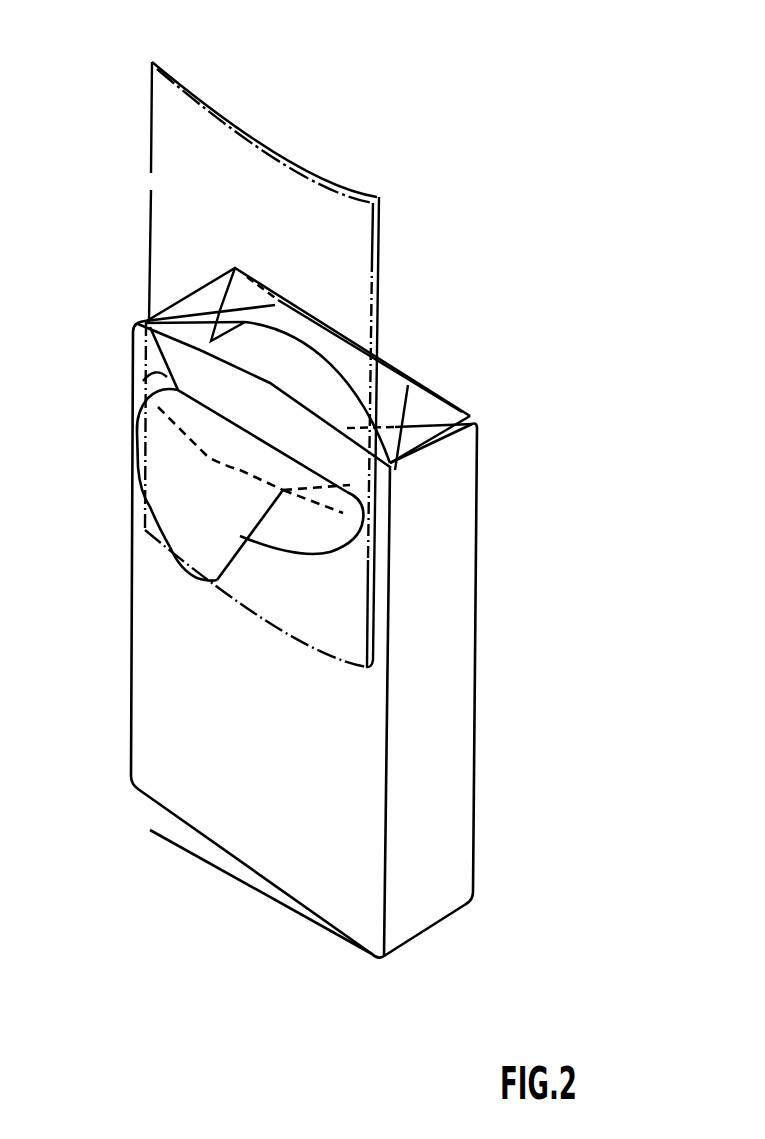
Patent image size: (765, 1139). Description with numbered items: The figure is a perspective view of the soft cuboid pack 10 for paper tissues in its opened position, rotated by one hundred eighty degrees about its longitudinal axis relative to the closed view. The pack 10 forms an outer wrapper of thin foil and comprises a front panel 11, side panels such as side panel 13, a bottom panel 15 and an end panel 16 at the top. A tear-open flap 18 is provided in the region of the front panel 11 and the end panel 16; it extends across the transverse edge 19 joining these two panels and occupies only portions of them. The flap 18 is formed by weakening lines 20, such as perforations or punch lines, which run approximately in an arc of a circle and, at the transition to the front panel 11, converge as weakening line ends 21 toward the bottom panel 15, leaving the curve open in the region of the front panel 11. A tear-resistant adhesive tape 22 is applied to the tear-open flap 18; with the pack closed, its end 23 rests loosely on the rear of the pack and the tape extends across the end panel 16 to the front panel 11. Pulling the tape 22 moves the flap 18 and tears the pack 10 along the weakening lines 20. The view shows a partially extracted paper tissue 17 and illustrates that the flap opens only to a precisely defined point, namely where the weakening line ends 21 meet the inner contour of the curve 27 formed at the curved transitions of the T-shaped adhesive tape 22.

The pack 10 is at (394, 639).
The front panel 11 is at (256, 740).
The side panel 13 is at (439, 724).
The bottom panel 15 is at (272, 910).
The end panel 16 is at (415, 343).
The paper tissue 17 is at (187, 143).
The tear-open flap 18 is at (167, 443).
The transverse edge 19 is at (390, 483).
The weakening lines 20 is at (287, 330).
The weakening line ends 21 is at (163, 360).
The adhesive tape 22 is at (193, 520).
The end of adhesive tape 23 is at (188, 563).
The curve 27 is at (158, 372).